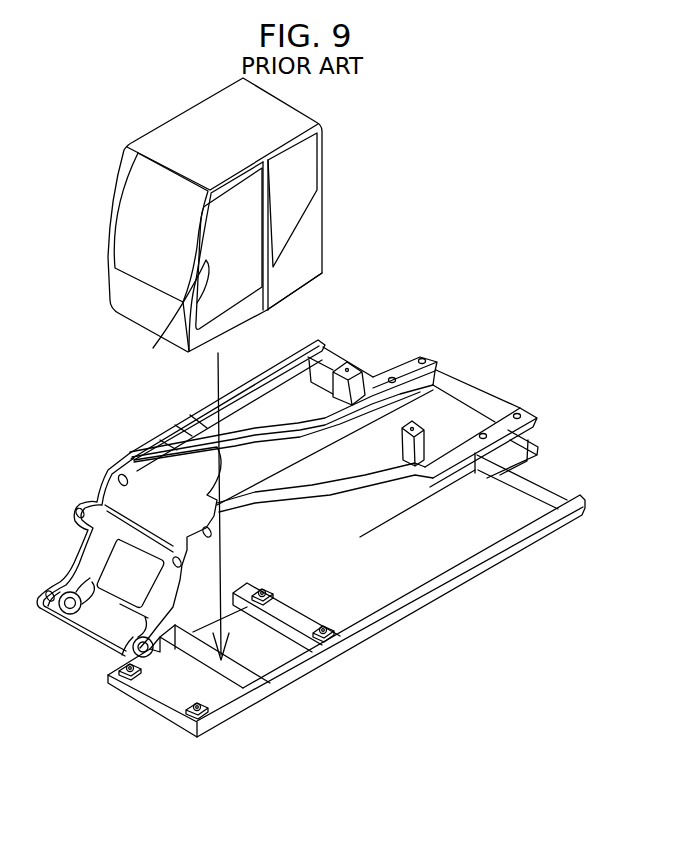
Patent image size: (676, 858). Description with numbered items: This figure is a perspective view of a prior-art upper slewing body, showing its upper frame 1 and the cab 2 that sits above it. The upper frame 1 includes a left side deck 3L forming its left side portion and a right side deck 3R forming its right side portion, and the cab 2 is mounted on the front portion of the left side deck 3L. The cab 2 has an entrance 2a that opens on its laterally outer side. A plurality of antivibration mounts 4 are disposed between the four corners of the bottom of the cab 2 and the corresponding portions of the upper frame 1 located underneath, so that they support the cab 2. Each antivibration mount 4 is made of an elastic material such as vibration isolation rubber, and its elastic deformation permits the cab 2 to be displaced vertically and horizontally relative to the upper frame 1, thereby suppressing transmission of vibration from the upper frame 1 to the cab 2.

The upper frame 1 is at (143, 431).
The cab 2 is at (325, 161).
The entrance 2a is at (174, 318).
The right side deck 3R is at (248, 383).
The left side deck 3L is at (372, 635).
The antivibration mount 4 is at (265, 588).